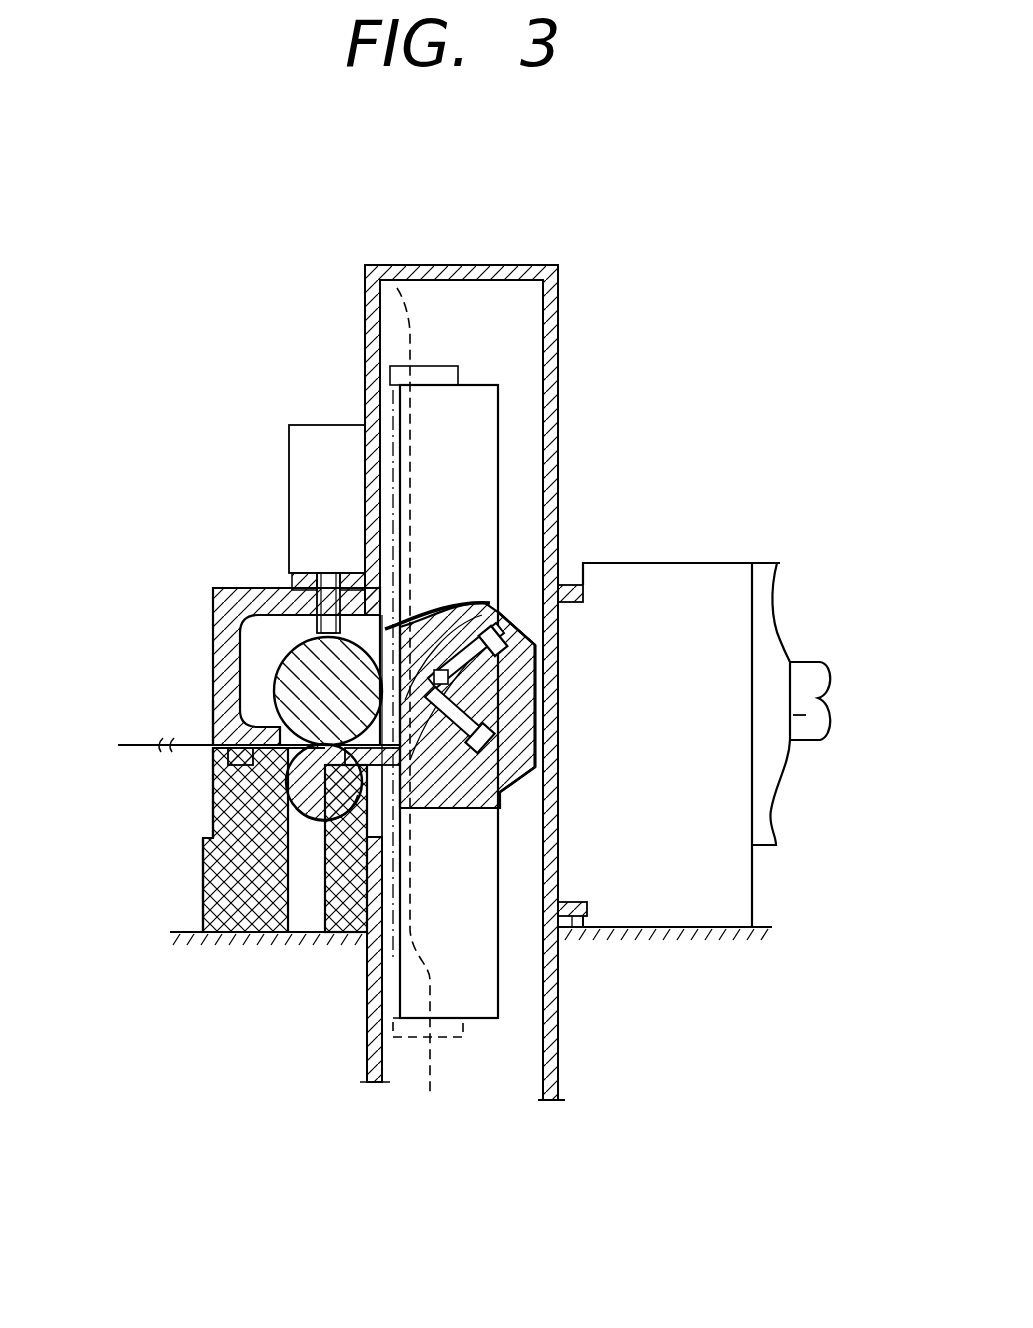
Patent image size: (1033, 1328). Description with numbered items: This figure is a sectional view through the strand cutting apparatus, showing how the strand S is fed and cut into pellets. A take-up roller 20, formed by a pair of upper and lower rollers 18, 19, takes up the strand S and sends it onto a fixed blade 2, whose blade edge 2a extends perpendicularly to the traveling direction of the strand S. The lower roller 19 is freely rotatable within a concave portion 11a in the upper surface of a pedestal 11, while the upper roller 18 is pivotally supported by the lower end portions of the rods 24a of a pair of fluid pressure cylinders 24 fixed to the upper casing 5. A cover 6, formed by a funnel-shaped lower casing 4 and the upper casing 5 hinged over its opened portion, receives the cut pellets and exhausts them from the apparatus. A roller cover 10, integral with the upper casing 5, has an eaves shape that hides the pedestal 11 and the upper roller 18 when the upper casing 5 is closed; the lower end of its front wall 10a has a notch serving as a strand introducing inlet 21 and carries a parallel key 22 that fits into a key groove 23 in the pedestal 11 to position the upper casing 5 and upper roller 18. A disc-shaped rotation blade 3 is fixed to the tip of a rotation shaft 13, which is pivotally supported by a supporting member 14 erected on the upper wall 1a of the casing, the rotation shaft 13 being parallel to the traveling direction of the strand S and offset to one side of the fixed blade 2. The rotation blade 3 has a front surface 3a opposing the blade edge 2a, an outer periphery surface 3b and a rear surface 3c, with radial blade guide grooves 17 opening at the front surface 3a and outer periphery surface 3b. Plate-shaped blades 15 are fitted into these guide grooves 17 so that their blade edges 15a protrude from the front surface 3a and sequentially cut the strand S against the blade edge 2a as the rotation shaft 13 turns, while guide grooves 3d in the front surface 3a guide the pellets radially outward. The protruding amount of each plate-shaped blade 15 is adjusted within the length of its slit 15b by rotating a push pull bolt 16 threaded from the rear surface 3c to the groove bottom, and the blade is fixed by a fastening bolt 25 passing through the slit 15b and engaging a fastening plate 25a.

The upper wall 1a is at (740, 935).
The fixed blade 2 is at (232, 937).
The blade edge 2a is at (310, 937).
The rotation blade 3 is at (500, 430).
The front surface 3a is at (390, 960).
The outer periphery surface 3b is at (465, 1037).
The rear surface 3c is at (547, 988).
The guide grooves 3d is at (405, 410).
The lower casing 4 is at (367, 1057).
The upper casing 5 is at (557, 315).
The cover 6 is at (456, 258).
The roller cover 10 is at (225, 590).
The front wall 10a is at (213, 722).
The pedestal 11 is at (203, 855).
The concave portion 11a is at (207, 905).
The rotation shaft 13 is at (803, 665).
The supporting member 14 is at (753, 888).
The plate-shaped blades 15 is at (397, 288).
The blade edges 15a is at (438, 684).
The slit 15b is at (470, 700).
The push pull bolt 16 is at (540, 628).
The blade guide grooves 17 is at (425, 800).
The upper roller 18 is at (285, 645).
The lower roller 19 is at (295, 760).
The take-up roller 20 is at (113, 558).
The strand introducing inlet 21 is at (213, 750).
The parallel key 22 is at (215, 766).
The key groove 23 is at (213, 807).
The fluid pressure cylinders 24 is at (289, 440).
The rods 24a is at (320, 590).
The fastening bolt 25 is at (500, 727).
The fastening plate 25a is at (432, 690).
The strand S is at (142, 745).